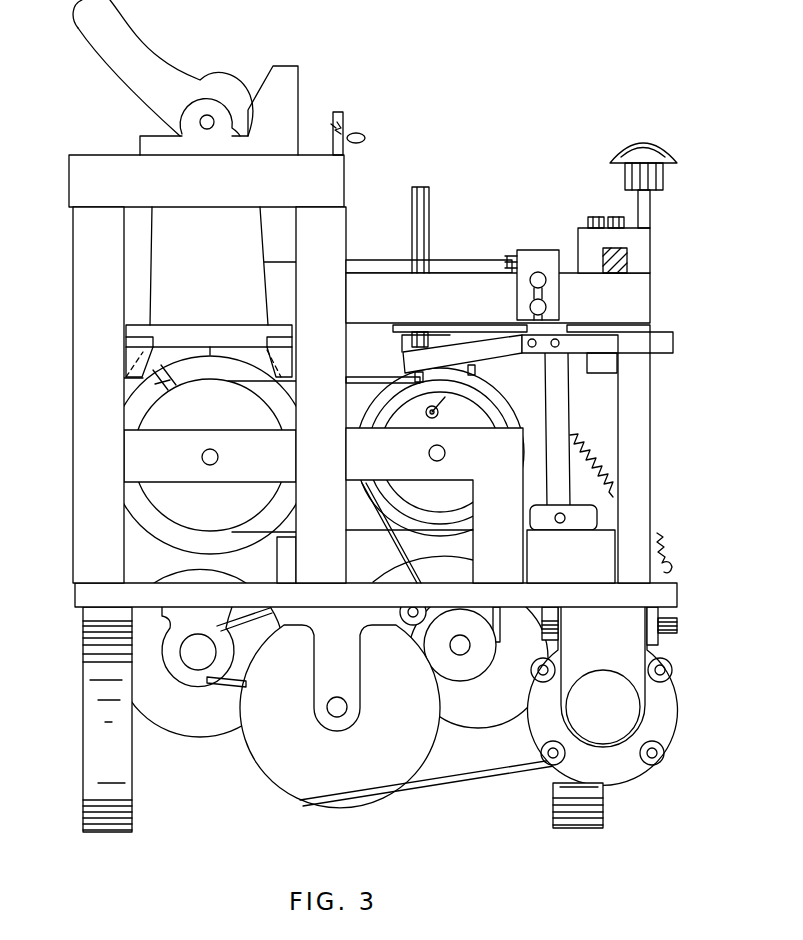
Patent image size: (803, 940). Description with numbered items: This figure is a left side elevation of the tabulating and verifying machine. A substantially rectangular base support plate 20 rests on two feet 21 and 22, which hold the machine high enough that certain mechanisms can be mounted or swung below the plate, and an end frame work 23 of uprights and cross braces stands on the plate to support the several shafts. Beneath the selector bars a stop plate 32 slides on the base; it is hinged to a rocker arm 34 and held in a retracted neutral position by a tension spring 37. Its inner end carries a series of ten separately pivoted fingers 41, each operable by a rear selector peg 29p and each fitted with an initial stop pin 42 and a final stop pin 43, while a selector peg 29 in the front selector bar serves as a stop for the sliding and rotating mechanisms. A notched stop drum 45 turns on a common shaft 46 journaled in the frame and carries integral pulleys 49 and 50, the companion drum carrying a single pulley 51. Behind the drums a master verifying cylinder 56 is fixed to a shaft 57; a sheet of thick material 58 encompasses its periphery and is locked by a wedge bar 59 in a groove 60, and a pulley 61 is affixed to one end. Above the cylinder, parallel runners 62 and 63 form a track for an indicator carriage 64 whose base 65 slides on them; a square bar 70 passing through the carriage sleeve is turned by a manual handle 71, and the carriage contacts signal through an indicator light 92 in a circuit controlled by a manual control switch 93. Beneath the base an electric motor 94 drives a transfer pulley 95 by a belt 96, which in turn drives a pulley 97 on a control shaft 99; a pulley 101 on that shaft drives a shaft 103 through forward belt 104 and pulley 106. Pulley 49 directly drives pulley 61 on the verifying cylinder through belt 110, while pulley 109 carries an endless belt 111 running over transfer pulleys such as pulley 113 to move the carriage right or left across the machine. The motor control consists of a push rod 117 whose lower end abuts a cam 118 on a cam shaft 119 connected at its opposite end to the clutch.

The base support plate 20 is at (678, 598).
The foot 21 is at (133, 822).
The foot 22 is at (604, 814).
The frame work 23 is at (82, 478).
The selector peg 29 is at (578, 228).
The selector peg 29p is at (424, 258).
The stop plate 32 is at (673, 343).
The rocker arm 34 is at (395, 336).
The tension spring 37 is at (608, 462).
The fingers 41 is at (490, 357).
The initial stop pin 42 is at (395, 378).
The final stop pin 43 is at (475, 372).
The stop drum 45 is at (522, 408).
The common shaft 46 is at (446, 453).
The pulley 49 is at (366, 410).
The pulley 50 is at (418, 515).
The pulley 51 is at (356, 498).
The verifying cylinder 56 is at (135, 427).
The shaft 57 is at (202, 457).
The sheet of thick material 58 is at (136, 392).
The wedge bar 59 is at (175, 392).
The groove 60 is at (157, 387).
The pulley 61 is at (257, 404).
The runner 62 is at (284, 360).
The runner 63 is at (128, 337).
The indicator carriage 64 is at (160, 123).
The base 65 is at (190, 332).
The square bar 70 is at (212, 128).
The handle 71 is at (98, 32).
The indicator light 92 is at (365, 138).
The control switch 93 is at (606, 217).
The electric motor 94 is at (667, 724).
The transfer pulley 95 is at (343, 800).
The belt 96 is at (506, 773).
The pulley 97 is at (178, 727).
The control shaft 99 is at (206, 652).
The pulley 101 is at (208, 680).
The shaft 103 is at (462, 648).
The forward belt 104 is at (247, 683).
The pulley 106 is at (478, 722).
The pulley 109 is at (470, 668).
The belt 110 is at (365, 390).
The endless belt 111 is at (446, 263).
The transfer pulley 113 is at (496, 258).
The push rod 117 is at (648, 218).
The cam 118 is at (660, 645).
The cam shaft 119 is at (679, 627).